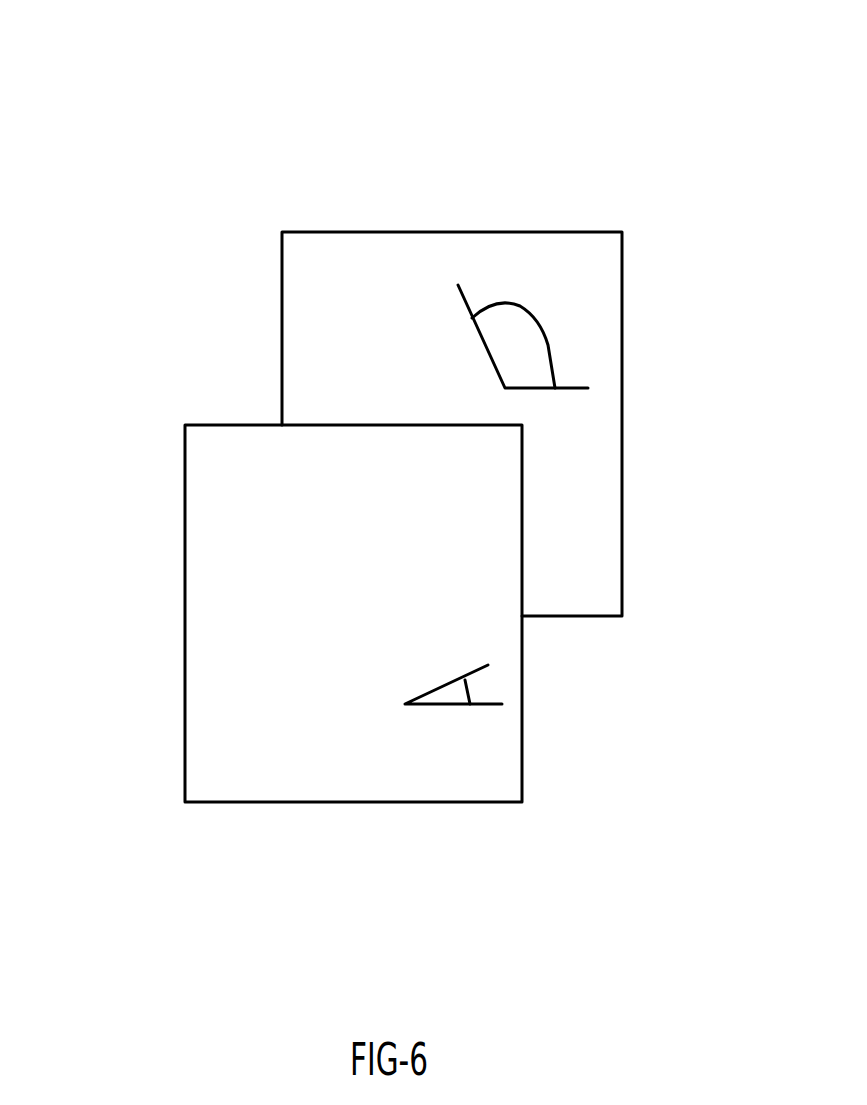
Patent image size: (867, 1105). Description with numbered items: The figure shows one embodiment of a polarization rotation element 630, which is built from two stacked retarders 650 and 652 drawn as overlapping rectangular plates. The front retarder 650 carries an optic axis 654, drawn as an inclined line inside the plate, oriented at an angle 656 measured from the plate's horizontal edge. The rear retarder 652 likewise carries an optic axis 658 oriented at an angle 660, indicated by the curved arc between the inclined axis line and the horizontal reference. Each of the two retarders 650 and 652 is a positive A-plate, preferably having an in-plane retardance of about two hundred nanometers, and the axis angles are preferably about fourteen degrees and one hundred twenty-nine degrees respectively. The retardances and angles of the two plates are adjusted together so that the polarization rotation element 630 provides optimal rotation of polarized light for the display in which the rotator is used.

The polarization rotation element 630 is at (196, 58).
The retarder 650 is at (185, 550).
The retarder 652 is at (282, 293).
The optic axis 654 is at (488, 665).
The angle 656 is at (468, 692).
The optic axis 658 is at (478, 280).
The angle 660 is at (545, 338).